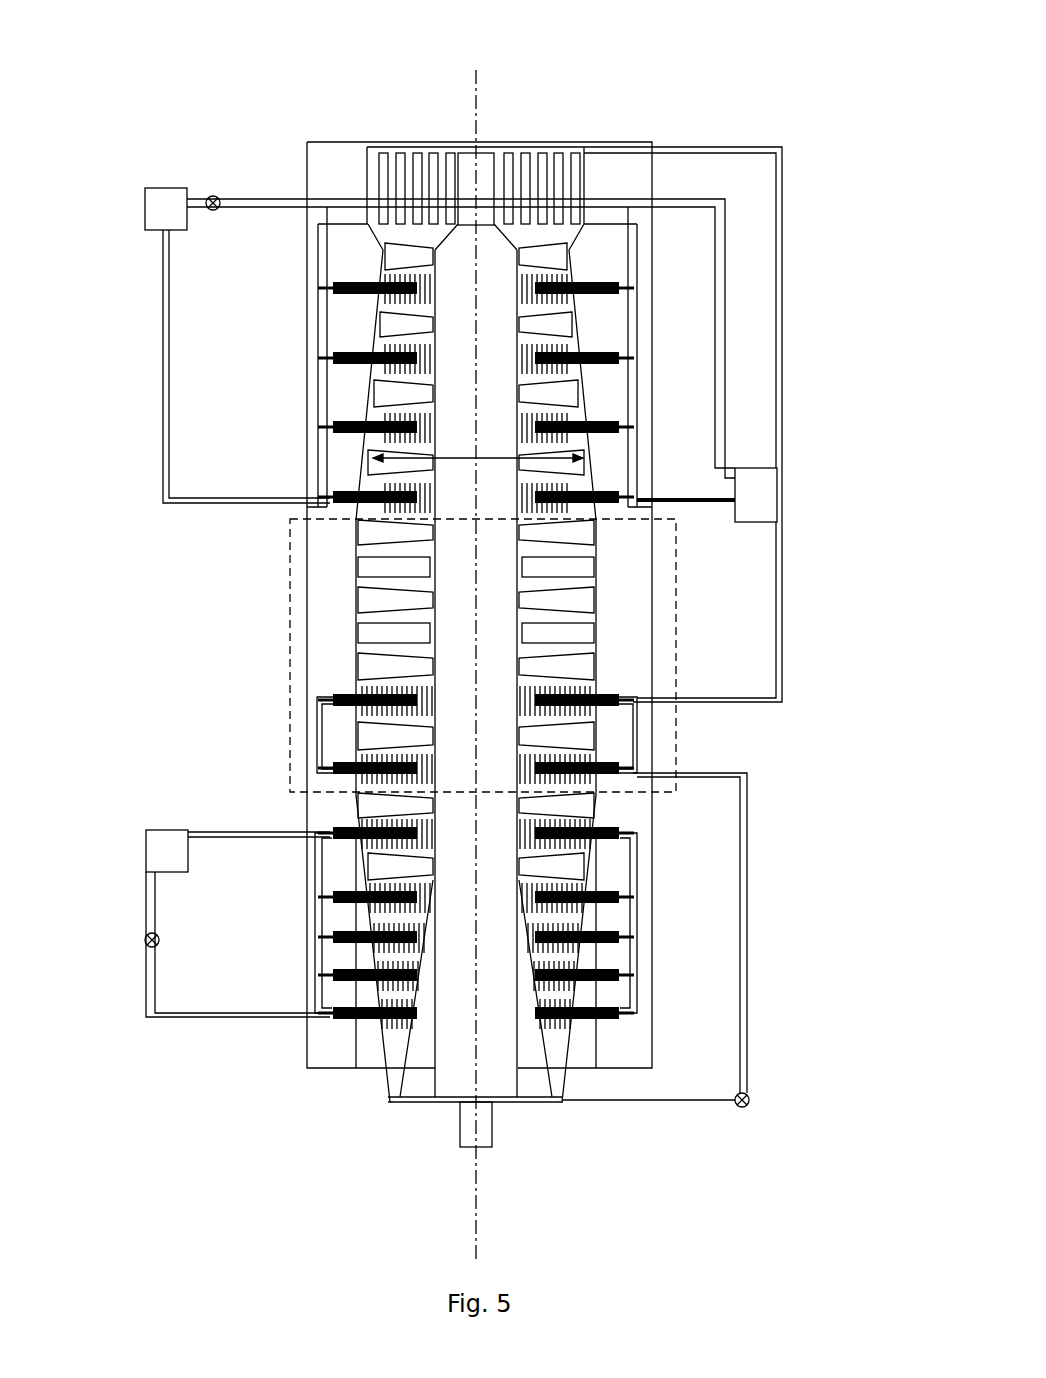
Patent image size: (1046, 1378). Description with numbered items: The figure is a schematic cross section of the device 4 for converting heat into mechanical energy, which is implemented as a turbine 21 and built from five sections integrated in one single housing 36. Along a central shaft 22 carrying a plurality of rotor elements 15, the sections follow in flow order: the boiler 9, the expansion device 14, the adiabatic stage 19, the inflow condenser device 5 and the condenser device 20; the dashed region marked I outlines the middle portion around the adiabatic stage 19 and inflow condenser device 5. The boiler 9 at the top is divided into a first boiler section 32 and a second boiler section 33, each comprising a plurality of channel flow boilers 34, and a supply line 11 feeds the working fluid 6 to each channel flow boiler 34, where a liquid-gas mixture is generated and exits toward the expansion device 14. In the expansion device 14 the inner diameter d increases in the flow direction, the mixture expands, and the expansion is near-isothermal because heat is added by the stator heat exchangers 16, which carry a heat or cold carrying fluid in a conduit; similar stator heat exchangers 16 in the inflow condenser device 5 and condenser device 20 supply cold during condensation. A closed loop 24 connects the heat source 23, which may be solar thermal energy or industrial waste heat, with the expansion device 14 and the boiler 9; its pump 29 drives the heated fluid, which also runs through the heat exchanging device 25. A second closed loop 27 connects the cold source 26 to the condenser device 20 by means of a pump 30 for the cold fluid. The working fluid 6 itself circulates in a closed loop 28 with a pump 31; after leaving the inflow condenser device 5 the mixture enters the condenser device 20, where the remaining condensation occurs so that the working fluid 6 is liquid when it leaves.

The device for converting heat into mechanical energy 4 is at (493, 613).
The turbine 21 is at (493, 613).
The inflow condenser device 5 is at (262, 687).
The working fluid 6 is at (736, 936).
The closed loop containing the working fluid 28 is at (742, 818).
The boiler 9 is at (262, 142).
The supply line 11 is at (695, 145).
The expansion device 14 is at (262, 222).
The rotor elements 15 is at (575, 325).
The stator heat exchangers 16 is at (598, 440).
The adiabatic stage 19 is at (262, 507).
The condenser device 20 is at (262, 797).
The shaft 22 is at (497, 1070).
The heat source 23 is at (160, 205).
The closed loop 24 is at (163, 302).
The heat exchanging device 25 is at (777, 502).
The cold source 26 is at (160, 845).
The closed loop 27 is at (205, 1017).
The pump 29 is at (213, 212).
The pump 30 is at (145, 940).
The pump 31 is at (752, 1100).
The first boiler section 32 is at (460, 110).
The second boiler section 33 is at (583, 110).
The channel flow boilers 34 is at (443, 145).
The housing 36 is at (328, 1045).
The inner diameter d is at (478, 447).
The detail region I is at (676, 760).